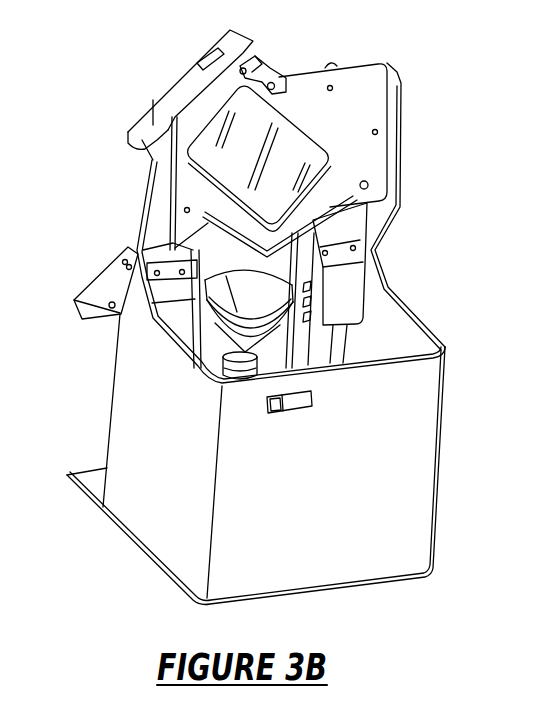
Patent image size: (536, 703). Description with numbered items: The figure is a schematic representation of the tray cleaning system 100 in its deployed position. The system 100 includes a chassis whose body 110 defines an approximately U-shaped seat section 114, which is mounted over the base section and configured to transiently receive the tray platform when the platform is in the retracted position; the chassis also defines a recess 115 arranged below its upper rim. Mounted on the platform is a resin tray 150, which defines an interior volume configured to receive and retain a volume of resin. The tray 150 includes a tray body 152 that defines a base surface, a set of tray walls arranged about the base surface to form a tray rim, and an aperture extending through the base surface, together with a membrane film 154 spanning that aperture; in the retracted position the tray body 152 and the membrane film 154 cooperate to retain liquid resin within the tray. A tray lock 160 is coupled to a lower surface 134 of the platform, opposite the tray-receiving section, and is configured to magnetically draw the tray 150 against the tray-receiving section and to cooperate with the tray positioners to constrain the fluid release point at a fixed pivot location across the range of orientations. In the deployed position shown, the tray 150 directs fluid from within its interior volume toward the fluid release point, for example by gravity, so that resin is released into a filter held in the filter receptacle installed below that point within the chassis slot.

The tray cleaning system 100 is at (238, 319).
The body 110 is at (253, 488).
The seat section 114 is at (256, 346).
The recess 115 is at (270, 410).
The lower surface 134 is at (351, 97).
The resin tray 150 is at (140, 126).
The tray body 152 is at (139, 174).
The membrane film 154 is at (247, 133).
The tray lock 160 is at (262, 66).